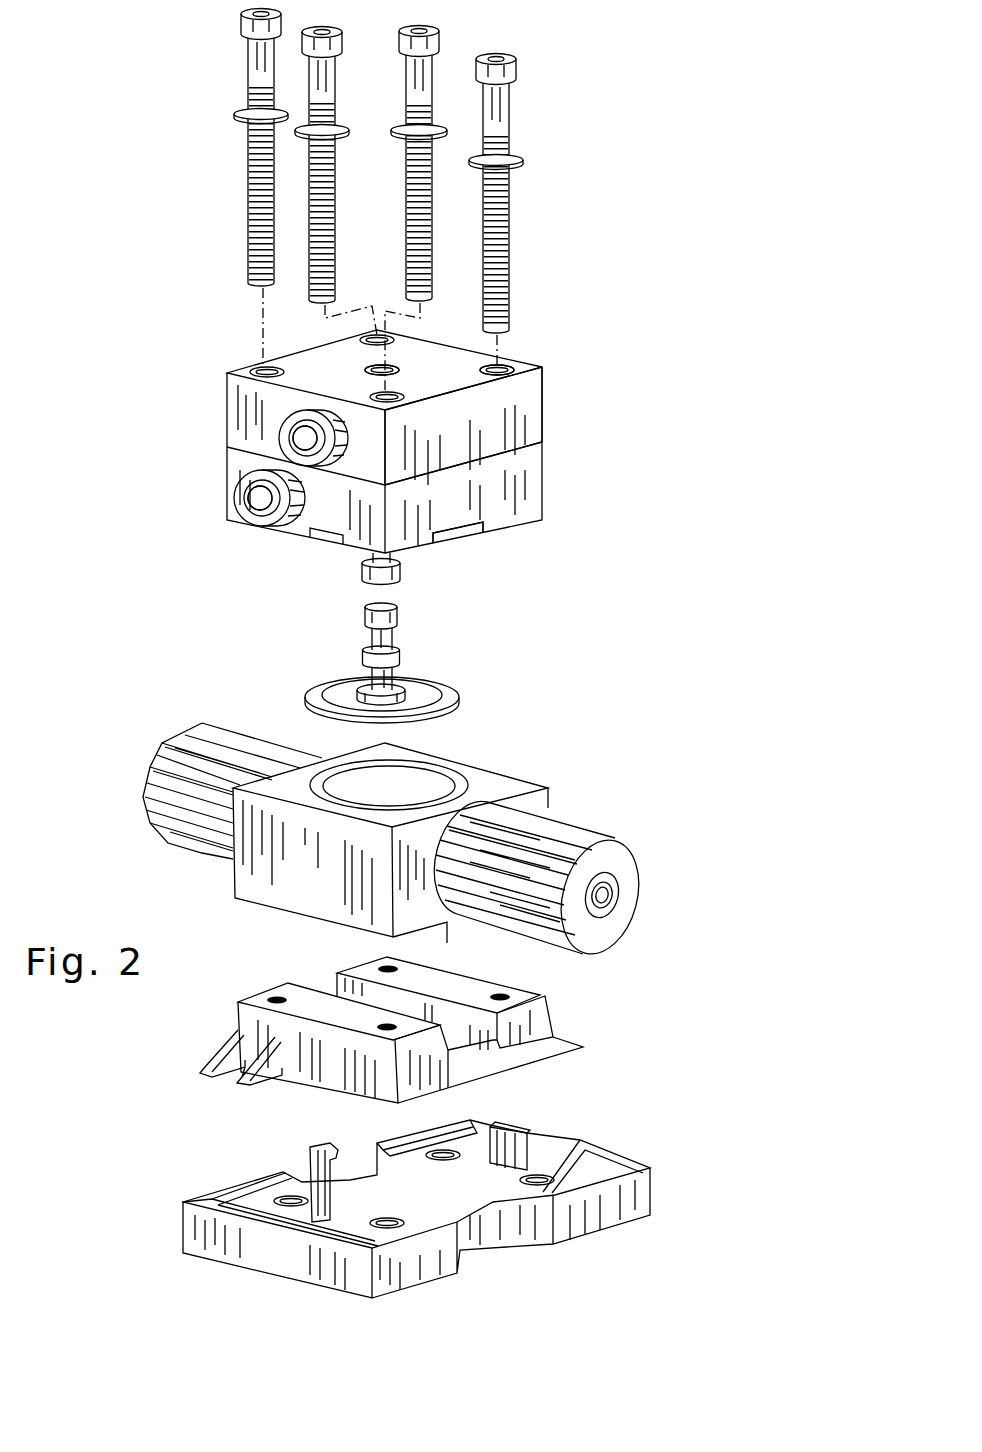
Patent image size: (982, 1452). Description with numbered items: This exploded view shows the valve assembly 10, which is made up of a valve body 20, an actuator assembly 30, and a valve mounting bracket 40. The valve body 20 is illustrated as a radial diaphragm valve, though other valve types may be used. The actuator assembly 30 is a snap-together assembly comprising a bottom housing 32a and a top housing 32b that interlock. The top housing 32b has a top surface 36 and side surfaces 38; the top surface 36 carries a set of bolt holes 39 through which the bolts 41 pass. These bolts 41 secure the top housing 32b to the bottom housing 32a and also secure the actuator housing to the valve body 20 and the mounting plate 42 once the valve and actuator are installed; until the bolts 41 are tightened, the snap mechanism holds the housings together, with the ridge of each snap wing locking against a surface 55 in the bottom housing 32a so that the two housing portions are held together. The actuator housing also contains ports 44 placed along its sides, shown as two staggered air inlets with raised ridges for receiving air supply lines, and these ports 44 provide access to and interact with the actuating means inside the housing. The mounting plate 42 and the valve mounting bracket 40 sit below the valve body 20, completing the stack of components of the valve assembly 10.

The valve assembly 10 is at (683, 604).
The valve body 20 is at (513, 777).
The actuator assembly 30 is at (552, 428).
The bottom housing 32a is at (233, 458).
The top housing 32b is at (234, 402).
The top surface 36 is at (313, 372).
The side surfaces 38 is at (523, 403).
The bolt holes 39 is at (508, 366).
The valve mounting bracket 40 is at (607, 1198).
The bolts 41 is at (316, 80).
The mounting plate 42 is at (523, 1037).
The ports 44 is at (307, 447).
The surface 55 is at (455, 534).